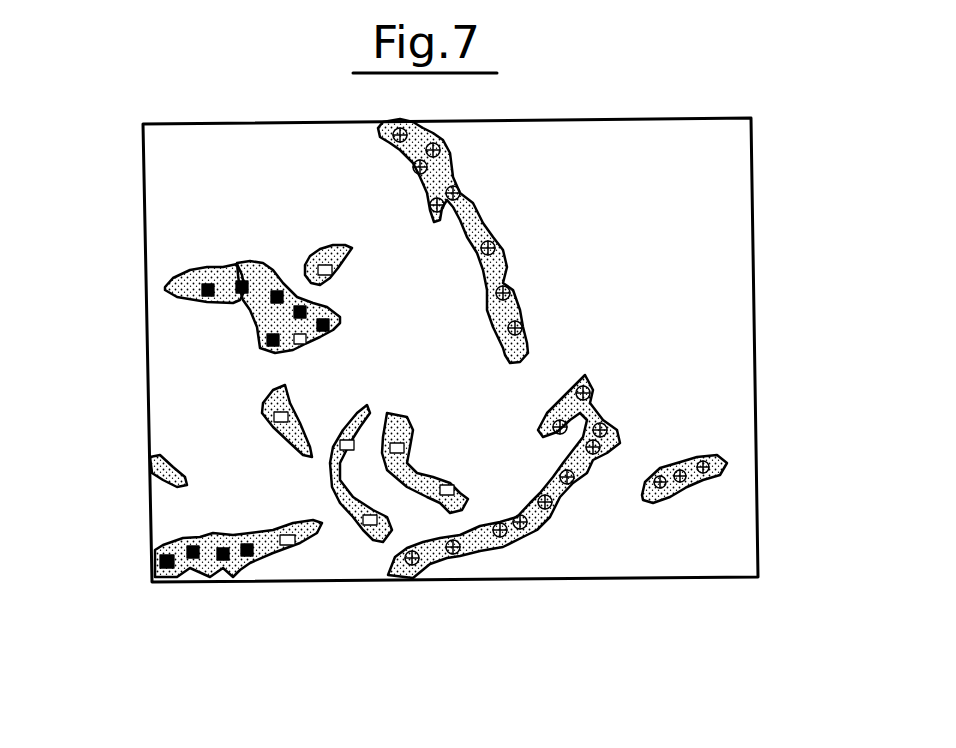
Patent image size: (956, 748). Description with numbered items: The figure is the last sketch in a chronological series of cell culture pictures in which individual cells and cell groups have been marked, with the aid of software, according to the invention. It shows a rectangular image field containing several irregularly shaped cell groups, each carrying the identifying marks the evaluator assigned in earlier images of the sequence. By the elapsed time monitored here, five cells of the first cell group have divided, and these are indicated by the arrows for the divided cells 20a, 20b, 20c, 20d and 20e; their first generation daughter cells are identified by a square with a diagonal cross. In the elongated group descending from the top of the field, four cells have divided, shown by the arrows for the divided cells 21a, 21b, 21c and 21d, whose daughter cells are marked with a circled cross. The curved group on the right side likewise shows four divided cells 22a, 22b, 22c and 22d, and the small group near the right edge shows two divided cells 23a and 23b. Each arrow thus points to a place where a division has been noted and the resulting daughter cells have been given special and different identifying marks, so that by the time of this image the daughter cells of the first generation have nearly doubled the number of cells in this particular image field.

The divided cell of cell group 20a is at (257, 247).
The divided cell of cell group 20b is at (173, 308).
The divided cell of cell group 20c is at (247, 340).
The divided cell of cell group 20d is at (178, 578).
The divided cell of cell group 20e is at (237, 578).
The divided cell of cell group 21a is at (410, 182).
The divided cell of cell group 21b is at (432, 127).
The divided cell of cell group 21c is at (492, 210).
The divided cell of cell group 21d is at (530, 303).
The divided cell of cell group 22a is at (602, 383).
The divided cell of cell group 22b is at (627, 437).
The divided cell of cell group 22c is at (513, 546).
The divided cell of cell group 22d is at (568, 505).
The divided cell of cell group 23a is at (722, 482).
The divided cell of cell group 23b is at (675, 502).